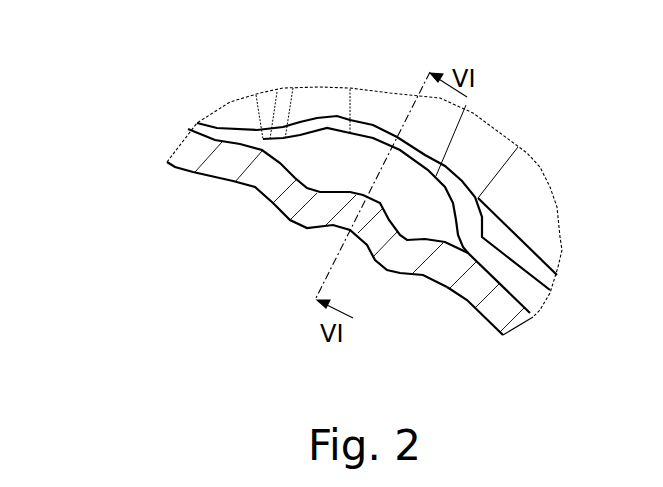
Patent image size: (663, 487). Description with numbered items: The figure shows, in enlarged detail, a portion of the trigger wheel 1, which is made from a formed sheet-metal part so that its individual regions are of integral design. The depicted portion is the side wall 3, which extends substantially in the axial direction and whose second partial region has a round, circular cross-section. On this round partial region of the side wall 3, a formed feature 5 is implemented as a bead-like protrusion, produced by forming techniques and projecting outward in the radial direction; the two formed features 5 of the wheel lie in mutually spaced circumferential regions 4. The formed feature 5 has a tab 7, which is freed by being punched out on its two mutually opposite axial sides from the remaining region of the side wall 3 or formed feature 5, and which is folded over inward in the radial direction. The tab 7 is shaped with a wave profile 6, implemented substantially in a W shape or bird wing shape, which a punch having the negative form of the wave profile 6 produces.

The trigger wheel 1 is at (160, 109).
The side wall 3 is at (508, 308).
The circumferential region 4 is at (363, 133).
The formed feature 5 is at (437, 218).
The wave profile 6 is at (295, 240).
The tab 7 is at (308, 212).